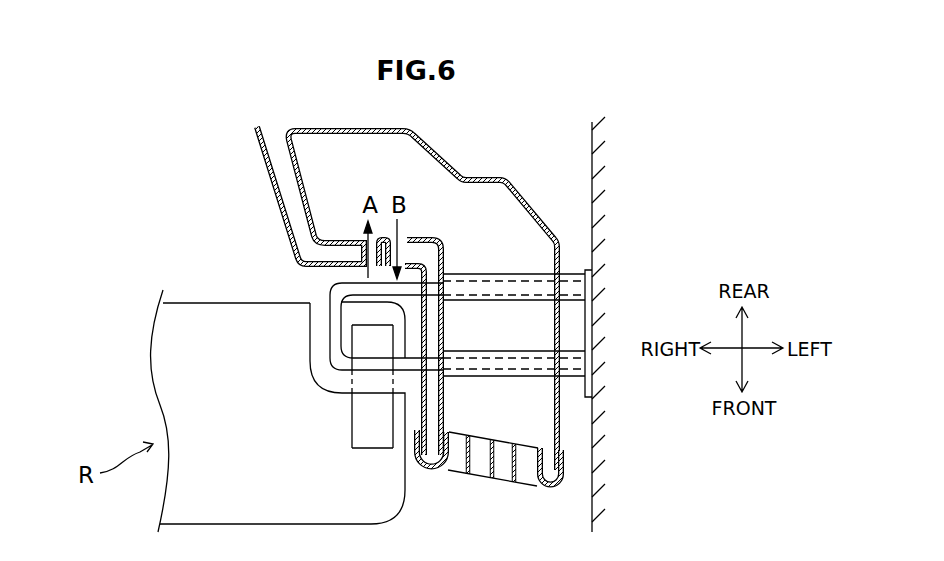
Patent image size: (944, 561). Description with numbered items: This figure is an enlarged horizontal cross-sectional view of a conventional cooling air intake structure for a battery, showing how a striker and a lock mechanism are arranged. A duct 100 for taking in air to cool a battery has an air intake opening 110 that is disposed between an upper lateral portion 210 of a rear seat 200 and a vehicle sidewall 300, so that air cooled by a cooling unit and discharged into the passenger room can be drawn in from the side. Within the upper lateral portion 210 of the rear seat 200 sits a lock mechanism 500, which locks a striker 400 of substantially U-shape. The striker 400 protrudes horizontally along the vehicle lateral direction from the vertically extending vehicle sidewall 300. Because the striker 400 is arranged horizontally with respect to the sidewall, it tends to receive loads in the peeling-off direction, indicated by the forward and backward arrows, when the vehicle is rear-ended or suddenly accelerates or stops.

The duct 100 is at (441, 152).
The air intake opening 110 is at (513, 423).
The rear seat 200 is at (204, 296).
The upper lateral portion 210 is at (265, 325).
The vehicle sidewall 300 is at (583, 175).
The striker 400 is at (523, 274).
The lock mechanism 500 is at (378, 458).